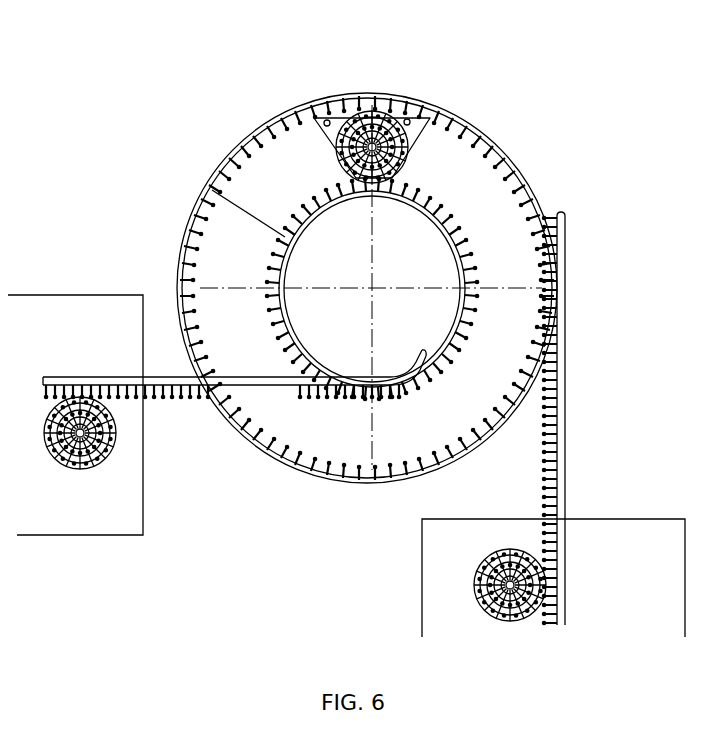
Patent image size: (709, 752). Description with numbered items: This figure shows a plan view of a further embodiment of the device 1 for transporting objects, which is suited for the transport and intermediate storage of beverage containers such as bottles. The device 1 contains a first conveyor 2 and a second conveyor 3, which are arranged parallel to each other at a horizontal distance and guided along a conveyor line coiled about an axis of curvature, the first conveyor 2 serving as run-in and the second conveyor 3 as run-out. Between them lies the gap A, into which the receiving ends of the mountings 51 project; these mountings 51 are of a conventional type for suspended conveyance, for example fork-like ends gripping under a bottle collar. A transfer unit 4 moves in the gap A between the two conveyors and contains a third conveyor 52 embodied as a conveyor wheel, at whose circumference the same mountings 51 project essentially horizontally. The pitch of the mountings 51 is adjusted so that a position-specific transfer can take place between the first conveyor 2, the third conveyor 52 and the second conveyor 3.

The device 1 is at (622, 95).
The first conveyor 2 is at (567, 455).
The second conveyor 3 is at (165, 375).
The transfer unit 4 is at (320, 113).
The mountings 51 is at (196, 390).
The third conveyor 52 is at (404, 98).
The gap A is at (248, 213).